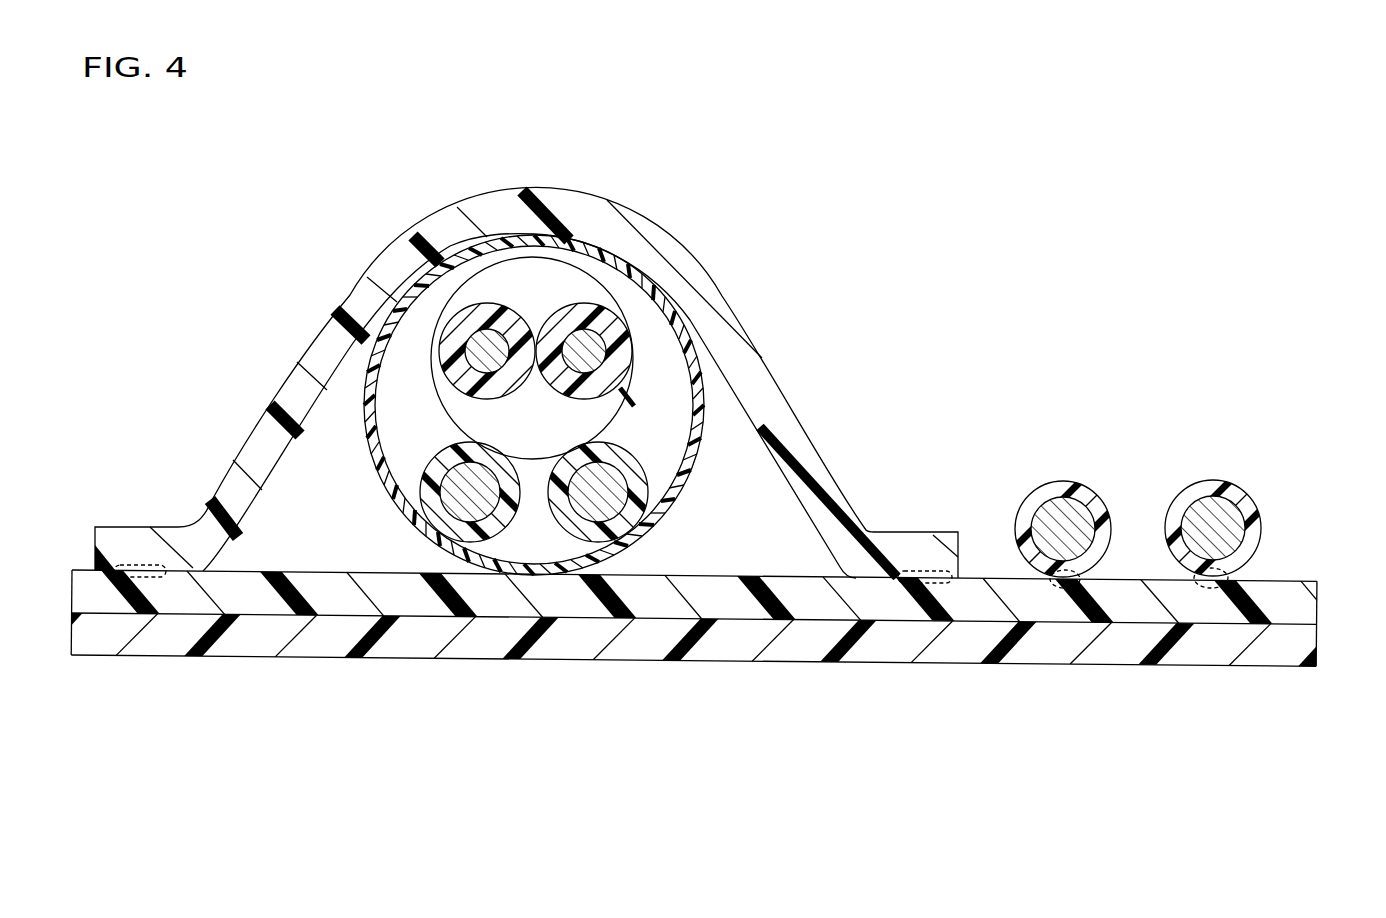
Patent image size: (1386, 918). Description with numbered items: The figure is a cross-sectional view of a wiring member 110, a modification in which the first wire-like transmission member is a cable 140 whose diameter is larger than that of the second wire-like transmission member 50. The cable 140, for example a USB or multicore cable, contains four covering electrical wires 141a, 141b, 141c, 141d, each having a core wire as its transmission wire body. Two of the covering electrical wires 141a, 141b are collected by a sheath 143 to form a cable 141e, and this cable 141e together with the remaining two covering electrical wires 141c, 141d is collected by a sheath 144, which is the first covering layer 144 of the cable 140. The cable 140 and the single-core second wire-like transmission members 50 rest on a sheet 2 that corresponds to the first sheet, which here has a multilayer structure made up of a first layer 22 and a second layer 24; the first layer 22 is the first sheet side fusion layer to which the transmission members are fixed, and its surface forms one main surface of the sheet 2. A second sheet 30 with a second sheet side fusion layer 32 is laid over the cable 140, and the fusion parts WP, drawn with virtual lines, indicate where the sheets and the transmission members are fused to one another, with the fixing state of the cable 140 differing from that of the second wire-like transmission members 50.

The sheet member 2 is at (705, 619).
The first layer (first sheet side fusion layer) 22 is at (1314, 607).
The second layer 24 is at (691, 640).
The second sheet 30 is at (526, 354).
The second sheet side fusion layer 32 is at (546, 190).
The second wire-like transmission member 50 is at (1069, 486).
The wiring member 110 is at (1142, 242).
The cable (first wire-like transmission member) 140 is at (672, 514).
The covering electrical wire 141a is at (499, 326).
The covering electrical wire 141b is at (590, 326).
The covering electrical wire 141c is at (444, 470).
The covering electrical wire 141d is at (627, 467).
The cable 141e is at (641, 400).
The sheath 143 is at (634, 376).
The sheath (first covering layer) 144 is at (684, 482).
The fusion part WP is at (140, 565).